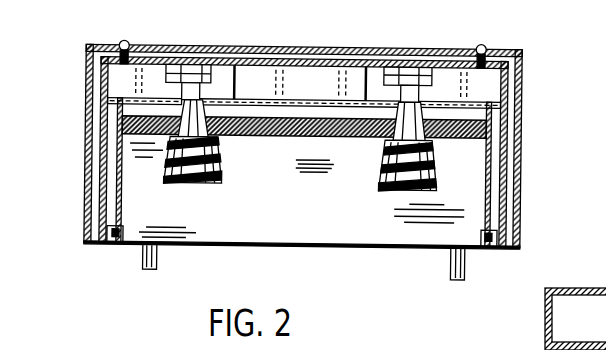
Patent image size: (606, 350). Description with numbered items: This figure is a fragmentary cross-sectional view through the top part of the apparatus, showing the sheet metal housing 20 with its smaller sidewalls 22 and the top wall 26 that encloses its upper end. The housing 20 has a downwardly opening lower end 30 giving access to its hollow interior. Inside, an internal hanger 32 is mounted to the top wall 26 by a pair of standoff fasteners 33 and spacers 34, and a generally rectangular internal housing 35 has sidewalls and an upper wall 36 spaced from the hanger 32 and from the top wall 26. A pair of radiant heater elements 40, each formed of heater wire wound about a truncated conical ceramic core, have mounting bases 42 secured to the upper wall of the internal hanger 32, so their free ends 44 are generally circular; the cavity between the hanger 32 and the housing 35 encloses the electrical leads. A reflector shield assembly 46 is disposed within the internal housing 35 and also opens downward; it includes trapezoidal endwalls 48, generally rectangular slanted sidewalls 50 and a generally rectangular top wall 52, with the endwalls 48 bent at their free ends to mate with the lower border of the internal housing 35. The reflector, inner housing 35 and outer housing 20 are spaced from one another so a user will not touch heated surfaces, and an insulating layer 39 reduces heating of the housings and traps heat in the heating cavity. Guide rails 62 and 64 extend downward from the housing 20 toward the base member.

The sheet metal housing 20 is at (325, 175).
The smaller sidewalls 22 is at (84, 72).
The top wall 26 is at (322, 50).
The downwardly opening lower end 30 is at (267, 246).
The internal hanger 32 is at (522, 67).
The standoff fasteners 33 is at (122, 43).
The spacers 34 is at (152, 48).
The internal housing 35 is at (503, 145).
The upper wall 36 is at (267, 66).
The insulating layer 39 is at (490, 130).
The radiant heater elements 40 is at (221, 176).
The mounting bases 42 is at (192, 67).
The free ends 44 is at (214, 199).
The reflector shield assembly 46 is at (394, 259).
The trapezoidal endwalls 48 is at (127, 216).
The slanted sidewalls 50 is at (213, 234).
The top wall 52 is at (235, 138).
The first pair of guide rails 62 is at (451, 268).
The second pair of guide rails 64 is at (159, 263).